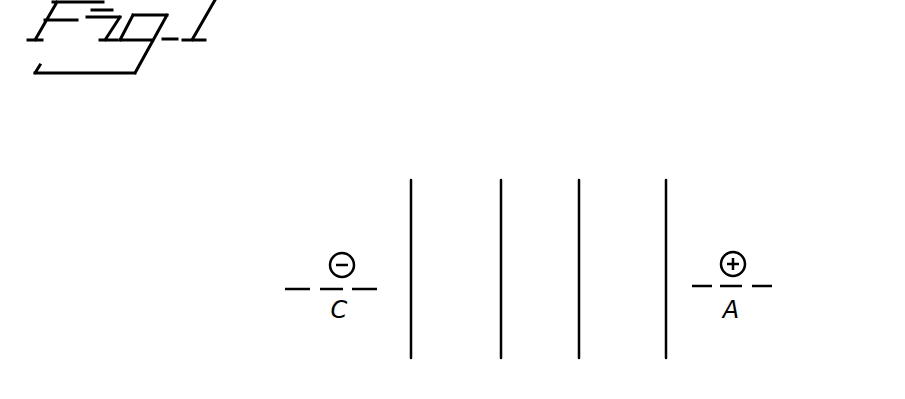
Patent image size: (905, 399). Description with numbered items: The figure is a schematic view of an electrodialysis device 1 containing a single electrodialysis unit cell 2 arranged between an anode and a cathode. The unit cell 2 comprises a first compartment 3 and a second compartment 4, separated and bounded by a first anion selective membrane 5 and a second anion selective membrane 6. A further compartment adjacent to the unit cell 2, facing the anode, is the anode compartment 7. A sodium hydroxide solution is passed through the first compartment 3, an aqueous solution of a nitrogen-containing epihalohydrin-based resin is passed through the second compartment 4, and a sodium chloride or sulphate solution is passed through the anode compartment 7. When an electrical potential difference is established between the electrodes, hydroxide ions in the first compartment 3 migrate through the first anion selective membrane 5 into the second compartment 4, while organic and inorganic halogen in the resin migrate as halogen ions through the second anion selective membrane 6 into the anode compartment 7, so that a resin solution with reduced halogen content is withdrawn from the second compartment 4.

The electrodialysis device 1 is at (838, 86).
The electrodialysis unit cell 2 is at (581, 133).
The first compartment 3 is at (437, 225).
The second compartment 4 is at (523, 225).
The first anion selective membrane 5 is at (498, 254).
The second anion selective membrane 6 is at (577, 254).
The anode compartment 7 is at (603, 225).